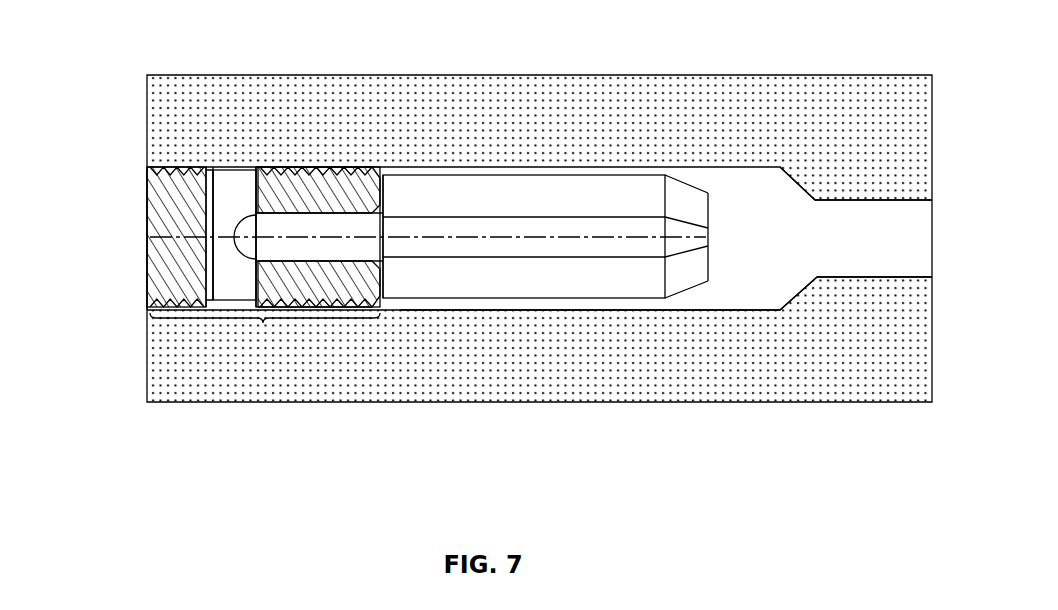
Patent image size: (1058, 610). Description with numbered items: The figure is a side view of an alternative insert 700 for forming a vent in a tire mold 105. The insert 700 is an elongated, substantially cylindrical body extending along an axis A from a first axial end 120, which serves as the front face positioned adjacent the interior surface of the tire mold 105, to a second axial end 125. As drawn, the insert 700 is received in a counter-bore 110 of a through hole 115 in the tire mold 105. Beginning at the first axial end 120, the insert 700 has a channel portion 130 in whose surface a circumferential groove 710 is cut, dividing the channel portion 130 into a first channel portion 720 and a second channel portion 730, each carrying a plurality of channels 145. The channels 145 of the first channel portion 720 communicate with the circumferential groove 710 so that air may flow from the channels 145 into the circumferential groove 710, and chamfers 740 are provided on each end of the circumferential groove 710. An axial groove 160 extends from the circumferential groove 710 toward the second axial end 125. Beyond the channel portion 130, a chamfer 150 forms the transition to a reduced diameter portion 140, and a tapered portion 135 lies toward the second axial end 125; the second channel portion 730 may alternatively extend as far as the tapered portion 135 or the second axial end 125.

The tire mold 105 is at (687, 377).
The counter-bore 110 is at (763, 268).
The through hole 115 is at (850, 243).
The first axial end 120 is at (147, 217).
The second axial end 125 is at (712, 207).
The channel portion 130 is at (263, 323).
The tapered portion 135 is at (687, 182).
The reduced diameter portion 140 is at (552, 332).
The channels 145 is at (192, 170).
The chamfer 150 is at (378, 167).
The axial groove 160 is at (528, 225).
The insert 700 is at (120, 177).
The circumferential groove 710 is at (233, 303).
The first channel portion 720 is at (160, 320).
The second channel portion 730 is at (343, 320).
The chamfers 740 is at (255, 168).
The axis A is at (430, 238).